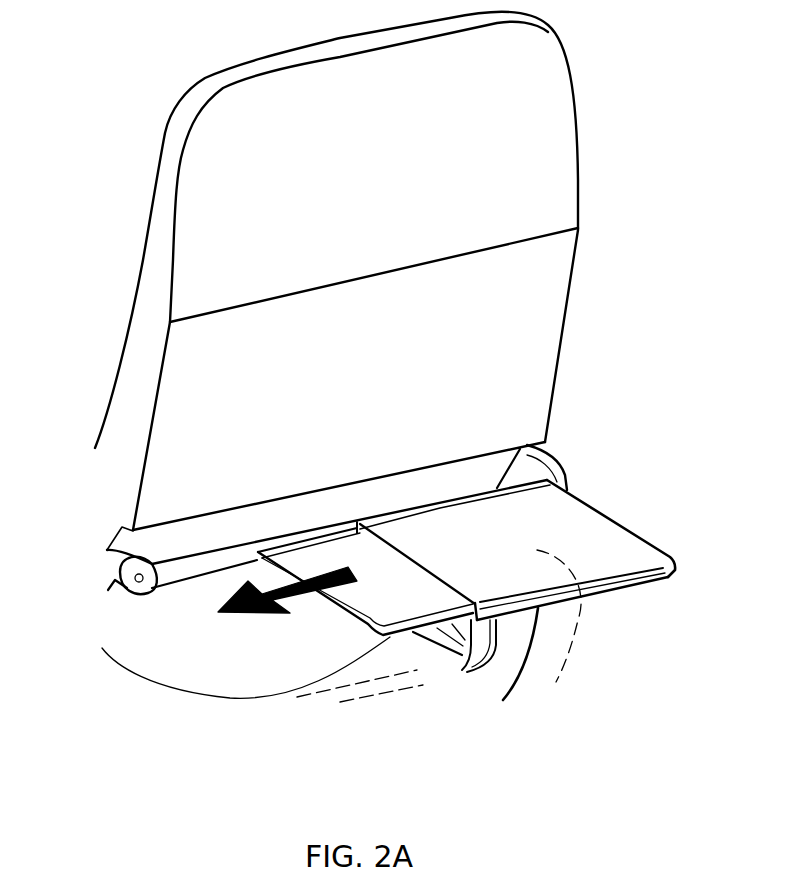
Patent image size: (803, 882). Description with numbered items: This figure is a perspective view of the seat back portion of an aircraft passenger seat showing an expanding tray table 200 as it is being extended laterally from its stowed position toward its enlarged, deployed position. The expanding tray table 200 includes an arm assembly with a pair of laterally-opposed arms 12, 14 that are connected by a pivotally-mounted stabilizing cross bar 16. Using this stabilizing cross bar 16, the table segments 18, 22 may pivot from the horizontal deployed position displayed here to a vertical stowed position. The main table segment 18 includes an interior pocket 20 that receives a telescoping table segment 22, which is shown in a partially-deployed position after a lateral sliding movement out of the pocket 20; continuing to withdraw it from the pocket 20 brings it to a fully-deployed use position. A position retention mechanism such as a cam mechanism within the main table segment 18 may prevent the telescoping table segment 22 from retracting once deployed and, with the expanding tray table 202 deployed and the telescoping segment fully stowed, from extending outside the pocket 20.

The expanding tray table 200 is at (128, 121).
The expanding tray table 202 is at (50, 535).
The arm 12 is at (120, 566).
The arm 14 is at (542, 447).
The stabilizing cross bar 16 is at (175, 570).
The main table segment 18 is at (585, 523).
The interior pocket 20 is at (559, 628).
The telescoping table segment 22 is at (383, 612).